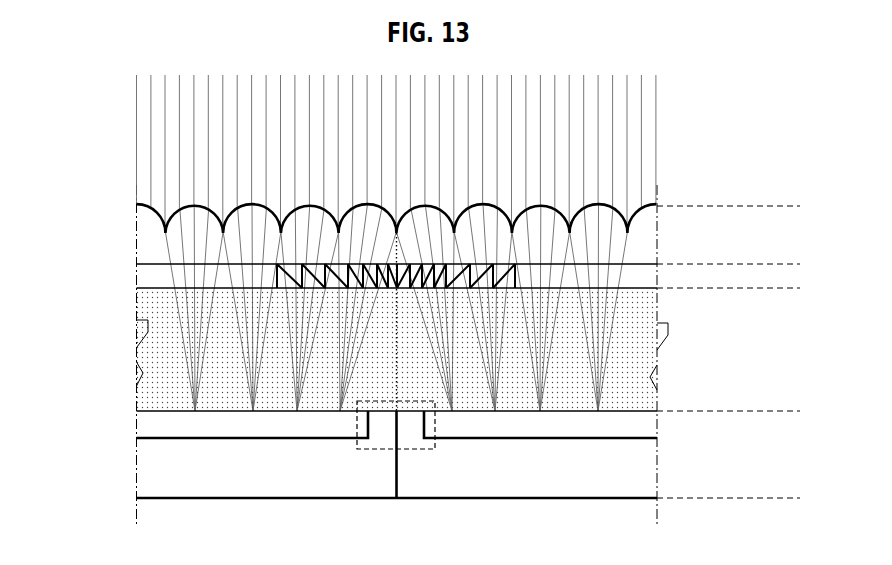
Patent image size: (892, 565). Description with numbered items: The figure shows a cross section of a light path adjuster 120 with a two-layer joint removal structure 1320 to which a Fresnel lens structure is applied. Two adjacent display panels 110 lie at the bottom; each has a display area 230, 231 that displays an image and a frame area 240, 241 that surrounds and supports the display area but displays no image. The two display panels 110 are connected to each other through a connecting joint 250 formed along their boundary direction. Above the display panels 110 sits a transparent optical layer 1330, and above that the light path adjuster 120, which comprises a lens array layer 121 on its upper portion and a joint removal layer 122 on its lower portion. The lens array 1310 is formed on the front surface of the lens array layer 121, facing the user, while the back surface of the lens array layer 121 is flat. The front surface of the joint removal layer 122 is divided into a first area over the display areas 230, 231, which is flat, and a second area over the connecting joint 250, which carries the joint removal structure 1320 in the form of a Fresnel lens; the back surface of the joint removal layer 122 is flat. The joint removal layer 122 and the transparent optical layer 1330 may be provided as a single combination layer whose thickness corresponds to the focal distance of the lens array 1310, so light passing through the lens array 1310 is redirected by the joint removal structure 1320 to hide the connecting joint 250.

The display panel 110 is at (792, 412).
The light path adjuster 120 is at (792, 207).
The lens array layer 121 is at (726, 207).
The joint removal layer 122 is at (726, 265).
The display area 230 is at (150, 421).
The display area 231 is at (643, 431).
The frame area 240 is at (150, 471).
The frame area 241 is at (643, 473).
The connecting joint 250 is at (417, 449).
The lens array 1310 is at (155, 219).
The joint removal structure 1320 is at (502, 231).
The transparent optical layer 1330 is at (726, 289).